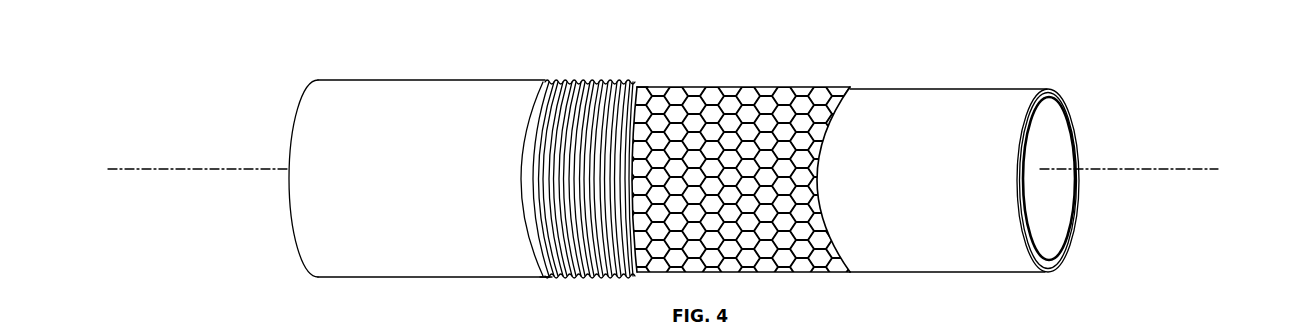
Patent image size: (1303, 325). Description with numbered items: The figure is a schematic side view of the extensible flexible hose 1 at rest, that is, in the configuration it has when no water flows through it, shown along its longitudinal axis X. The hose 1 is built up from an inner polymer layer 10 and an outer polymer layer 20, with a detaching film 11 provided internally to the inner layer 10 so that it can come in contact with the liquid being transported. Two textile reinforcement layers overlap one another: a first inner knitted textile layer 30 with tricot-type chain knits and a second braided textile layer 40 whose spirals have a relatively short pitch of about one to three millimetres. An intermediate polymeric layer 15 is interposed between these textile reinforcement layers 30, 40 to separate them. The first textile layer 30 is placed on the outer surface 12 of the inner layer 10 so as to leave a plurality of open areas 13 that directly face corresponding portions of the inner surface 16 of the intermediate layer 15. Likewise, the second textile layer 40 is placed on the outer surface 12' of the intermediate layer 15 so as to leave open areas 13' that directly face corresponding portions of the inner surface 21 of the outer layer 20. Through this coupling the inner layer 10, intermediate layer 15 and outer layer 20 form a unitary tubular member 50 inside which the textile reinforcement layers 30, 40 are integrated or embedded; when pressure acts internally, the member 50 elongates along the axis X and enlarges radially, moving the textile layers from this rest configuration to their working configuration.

The extensible flexible hose 1 is at (170, 87).
The inner polymer layer 10 is at (936, 186).
The detaching film 11 is at (1050, 128).
The outer surface of the inner layer 12 is at (1033, 154).
The open areas 13 is at (826, 154).
The outer surface of the intermediate layer 12' is at (653, 149).
The open areas 13' is at (552, 151).
The intermediate polymeric layer 15 is at (639, 266).
The inner surface of the intermediate layer 16 is at (651, 89).
The outer polymer layer 20 is at (417, 178).
The inner surface of the outer layer 21 is at (555, 277).
The first inner knitted textile layer 30 is at (756, 74).
The second braided textile layer 40 is at (600, 72).
The unitary tubular member 50 is at (297, 76).
The axis X is at (172, 170).